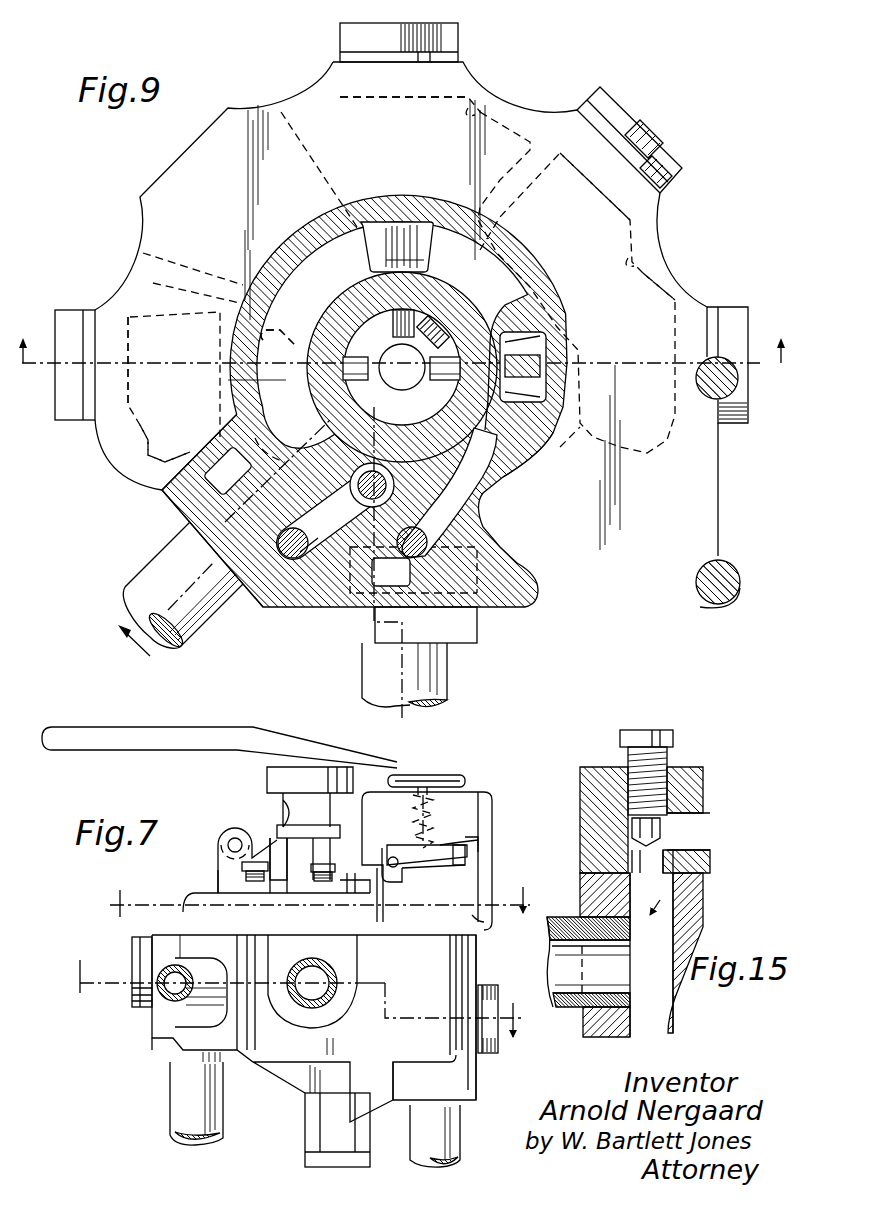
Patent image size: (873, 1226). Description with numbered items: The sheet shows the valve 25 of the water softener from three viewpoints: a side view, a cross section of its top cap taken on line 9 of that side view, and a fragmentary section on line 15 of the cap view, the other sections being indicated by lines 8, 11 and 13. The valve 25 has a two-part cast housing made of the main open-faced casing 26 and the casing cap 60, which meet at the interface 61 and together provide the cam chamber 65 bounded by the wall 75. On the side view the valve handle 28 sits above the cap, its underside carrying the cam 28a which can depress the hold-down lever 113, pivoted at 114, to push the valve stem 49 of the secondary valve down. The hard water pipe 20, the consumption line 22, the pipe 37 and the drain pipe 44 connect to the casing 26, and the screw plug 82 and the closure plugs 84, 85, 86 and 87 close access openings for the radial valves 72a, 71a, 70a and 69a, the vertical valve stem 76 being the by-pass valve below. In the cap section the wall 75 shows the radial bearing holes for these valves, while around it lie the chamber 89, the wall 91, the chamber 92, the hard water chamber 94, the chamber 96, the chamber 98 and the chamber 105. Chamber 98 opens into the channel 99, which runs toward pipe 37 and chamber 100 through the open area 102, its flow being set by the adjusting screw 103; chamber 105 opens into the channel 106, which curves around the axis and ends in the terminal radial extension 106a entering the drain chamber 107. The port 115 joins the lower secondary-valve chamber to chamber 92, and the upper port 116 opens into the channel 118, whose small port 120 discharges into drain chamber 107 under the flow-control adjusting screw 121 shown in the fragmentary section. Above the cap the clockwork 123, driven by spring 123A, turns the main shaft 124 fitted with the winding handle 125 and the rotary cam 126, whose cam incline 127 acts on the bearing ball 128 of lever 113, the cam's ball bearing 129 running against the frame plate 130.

In FIG. 7, the section line 8- 8 is at (296, 985).
In FIG. 7, the section line 9- 9 is at (319, 889).
In FIG. 9, the section line 11- 11 is at (399, 377).
In FIG. 9, the section line 13- 13 is at (375, 407).
In FIG. 9, the section line 15- 15 is at (144, 653).
In FIG. 7, the hard water pipe 20 is at (460, 1127).
In FIG. 7, the consumption line 22 is at (175, 1110).
In FIG. 9, the valve 25 is at (663, 221).
In FIG. 7, the valve 25 is at (150, 1050).
In FIG. 9, the casing 26 is at (478, 627).
In FIG. 7, the casing 26 is at (472, 960).
In FIG. 15, the casing 26 is at (583, 1013).
In FIG. 7, the valve handle 28 is at (113, 734).
In FIG. 7, the cam 28a is at (283, 810).
In FIG. 9, the pipe 37 is at (445, 671).
In FIG. 7, the pipe 37 is at (318, 960).
In FIG. 9, the drain pipe 44 is at (150, 573).
In FIG. 7, the drain pipe 44 is at (177, 1001).
In FIG. 15, the drain pipe 44 is at (560, 920).
In FIG. 9, the valve stem 49 is at (372, 490).
In FIG. 7, the valve stem 49 is at (285, 871).
In FIG. 9, the casing cap 60 is at (170, 502).
In FIG. 7, the casing cap 60 is at (180, 892).
In FIG. 15, the casing cap 60 is at (688, 766).
In FIG. 7, the interface 61 is at (210, 933).
In FIG. 9, the cam chamber 65 is at (367, 323).
In FIG. 9, the valve 69a is at (437, 377).
In FIG. 9, the valve 70a is at (412, 340).
In FIG. 9, the valve 71a is at (403, 226).
In FIG. 9, the valve member 72a is at (352, 378).
In FIG. 9, the wall 75 is at (318, 383).
In FIG. 9, the valve stem 76 is at (427, 361).
In FIG. 7, the screw plug 82 is at (303, 1160).
In FIG. 9, the closure plug 84 is at (67, 317).
In FIG. 7, the closure plug 84 is at (135, 1007).
In FIG. 9, the closure plug 85 is at (447, 41).
In FIG. 9, the closure plug 86 is at (663, 157).
In FIG. 9, the closure plug 87 is at (732, 318).
In FIG. 7, the closure plug 87 is at (492, 1053).
In FIG. 9, the chamber 89 is at (130, 433).
In FIG. 9, the wall 91 is at (228, 383).
In FIG. 9, the chamber 92 is at (279, 328).
In FIG. 9, the chamber 94 is at (662, 250).
In FIG. 9, the chamber 96 is at (482, 114).
In FIG. 9, the chamber 98 is at (535, 388).
In FIG. 9, the channel 99 is at (500, 456).
In FIG. 9, the chamber 100 is at (503, 543).
In FIG. 9, the open area 102 is at (391, 572).
In FIG. 9, the adjusting screw 103 is at (428, 539).
In FIG. 7, the adjusting screw 103 is at (323, 882).
In FIG. 9, the chamber 105 is at (377, 227).
In FIG. 9, the channel 106 is at (277, 270).
In FIG. 9, the terminal radial extension 106a is at (245, 432).
In FIG. 9, the drain chamber 107 is at (227, 470).
In FIG. 15, the drain chamber 107 is at (660, 920).
In FIG. 7, the hold-down lever 113 is at (267, 827).
In FIG. 7, the pivot 114 is at (233, 840).
In FIG. 9, the port 115 is at (332, 514).
In FIG. 9, the port 116 is at (398, 484).
In FIG. 9, the channel 118 is at (328, 535).
In FIG. 15, the channel 118 is at (698, 828).
In FIG. 15, the port 120 is at (658, 865).
In FIG. 9, the flow-control adjusting screw 121 is at (307, 556).
In FIG. 7, the flow-control adjusting screw 121 is at (242, 868).
In FIG. 15, the flow-control adjusting screw 121 is at (663, 732).
In FIG. 7, the clockwork 123 is at (462, 793).
In FIG. 7, the spring 123A is at (437, 808).
In FIG. 7, the main shaft 124 is at (437, 840).
In FIG. 7, the winding handle 125 is at (457, 765).
In FIG. 7, the rotary cam 126 is at (465, 857).
In FIG. 7, the cam incline 127 is at (442, 868).
In FIG. 7, the bearing ball 128 is at (395, 856).
In FIG. 7, the ball bearing 129 is at (474, 843).
In FIG. 7, the frame plate 130 is at (457, 838).